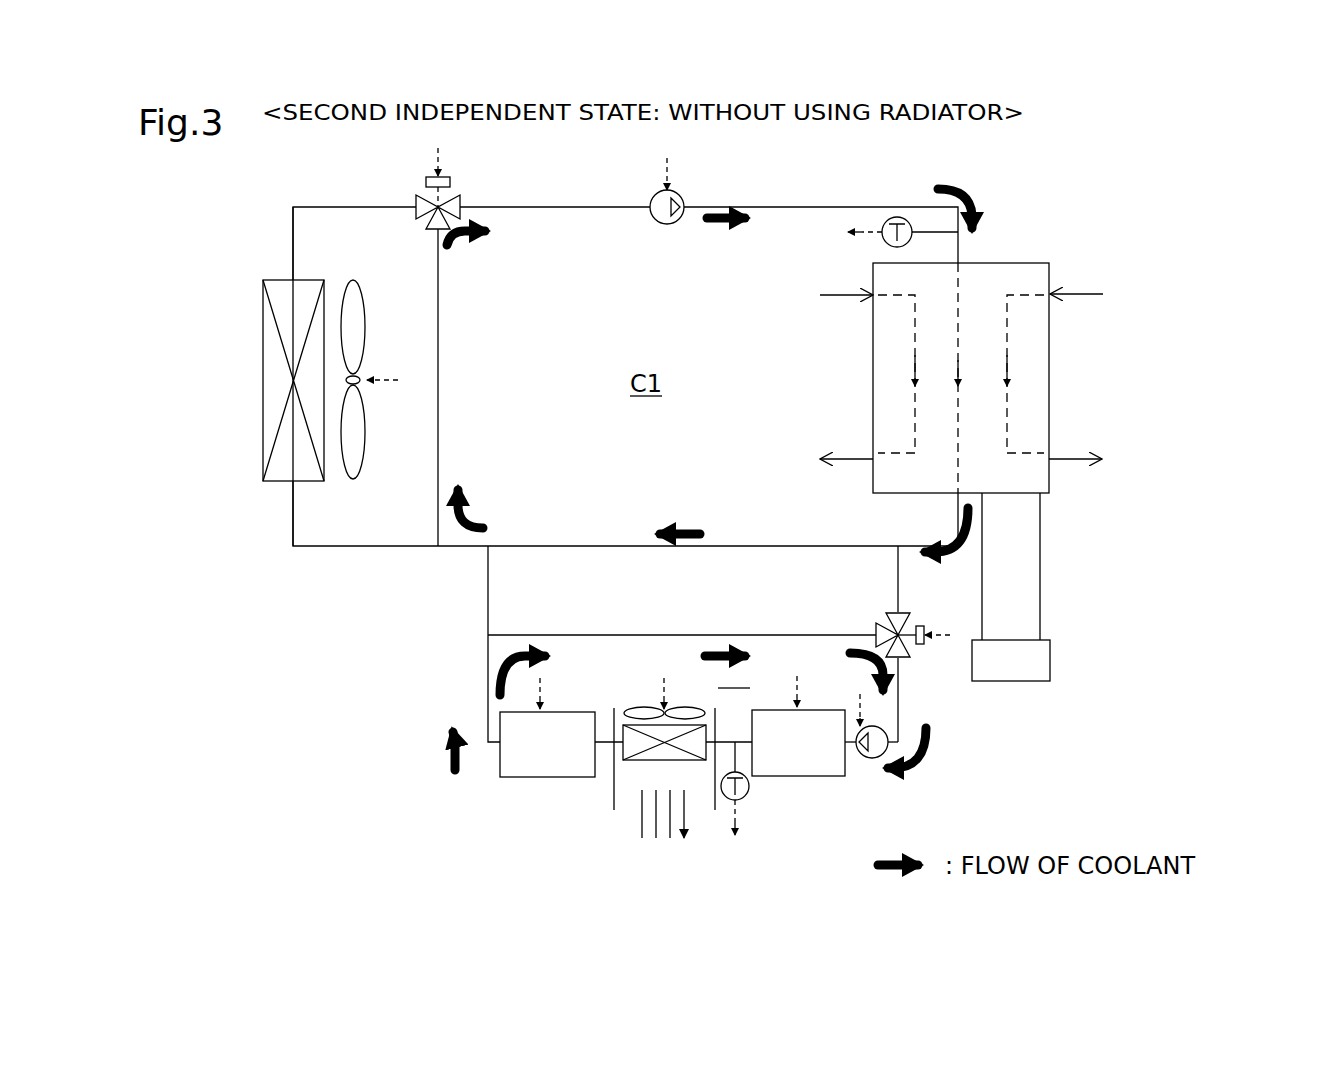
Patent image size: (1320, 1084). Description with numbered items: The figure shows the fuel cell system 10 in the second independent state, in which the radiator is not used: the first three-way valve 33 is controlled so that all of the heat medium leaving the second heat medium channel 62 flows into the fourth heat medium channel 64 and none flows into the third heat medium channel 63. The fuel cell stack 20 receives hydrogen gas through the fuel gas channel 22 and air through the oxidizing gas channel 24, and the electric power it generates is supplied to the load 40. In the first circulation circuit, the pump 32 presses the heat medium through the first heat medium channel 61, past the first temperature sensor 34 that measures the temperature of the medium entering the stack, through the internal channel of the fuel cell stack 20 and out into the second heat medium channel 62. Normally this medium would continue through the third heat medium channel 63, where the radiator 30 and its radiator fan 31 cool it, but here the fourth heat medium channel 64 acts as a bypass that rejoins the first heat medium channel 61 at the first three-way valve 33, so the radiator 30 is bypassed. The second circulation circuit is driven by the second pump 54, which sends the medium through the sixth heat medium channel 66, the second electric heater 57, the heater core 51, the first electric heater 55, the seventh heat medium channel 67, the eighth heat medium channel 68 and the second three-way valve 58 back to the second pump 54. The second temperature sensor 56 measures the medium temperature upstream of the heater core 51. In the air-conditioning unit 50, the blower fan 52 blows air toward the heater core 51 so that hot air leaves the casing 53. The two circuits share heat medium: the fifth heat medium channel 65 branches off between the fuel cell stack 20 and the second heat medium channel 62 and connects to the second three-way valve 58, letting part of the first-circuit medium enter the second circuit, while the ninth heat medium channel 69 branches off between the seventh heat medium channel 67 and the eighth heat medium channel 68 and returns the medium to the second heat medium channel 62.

The fuel cell system 10 is at (1030, 152).
The fuel cell stack 20 is at (1000, 263).
The fuel gas channel 22 is at (1080, 293).
The oxidizing gas channel 24 is at (845, 295).
The radiator 30 is at (318, 481).
The radiator fan 31 is at (366, 336).
The pump 32 is at (675, 193).
The first three-way valve 33 is at (450, 197).
The first temperature sensor 34 is at (885, 222).
The load 40 is at (1050, 661).
The air-conditioning unit 50 is at (715, 830).
The heater core 51 is at (633, 760).
The blower fan 52 is at (645, 710).
The casing 53 is at (614, 805).
The second pump 54 is at (890, 728).
The first electric heater 55 is at (540, 777).
The second temperature sensor 56 is at (748, 796).
The second electric heater 57 is at (815, 776).
The second three-way valve 58 is at (890, 622).
The first heat medium channel 61 is at (775, 207).
The second heat medium channel 62 is at (700, 546).
The third heat medium channel 63 is at (395, 546).
The fourth heat medium channel 64 is at (438, 455).
The fifth heat medium channel 65 is at (898, 575).
The sixth heat medium channel 66 is at (898, 667).
The seventh heat medium channel 67 is at (488, 676).
The eighth heat medium channel 68 is at (645, 635).
The ninth heat medium channel 69 is at (488, 596).